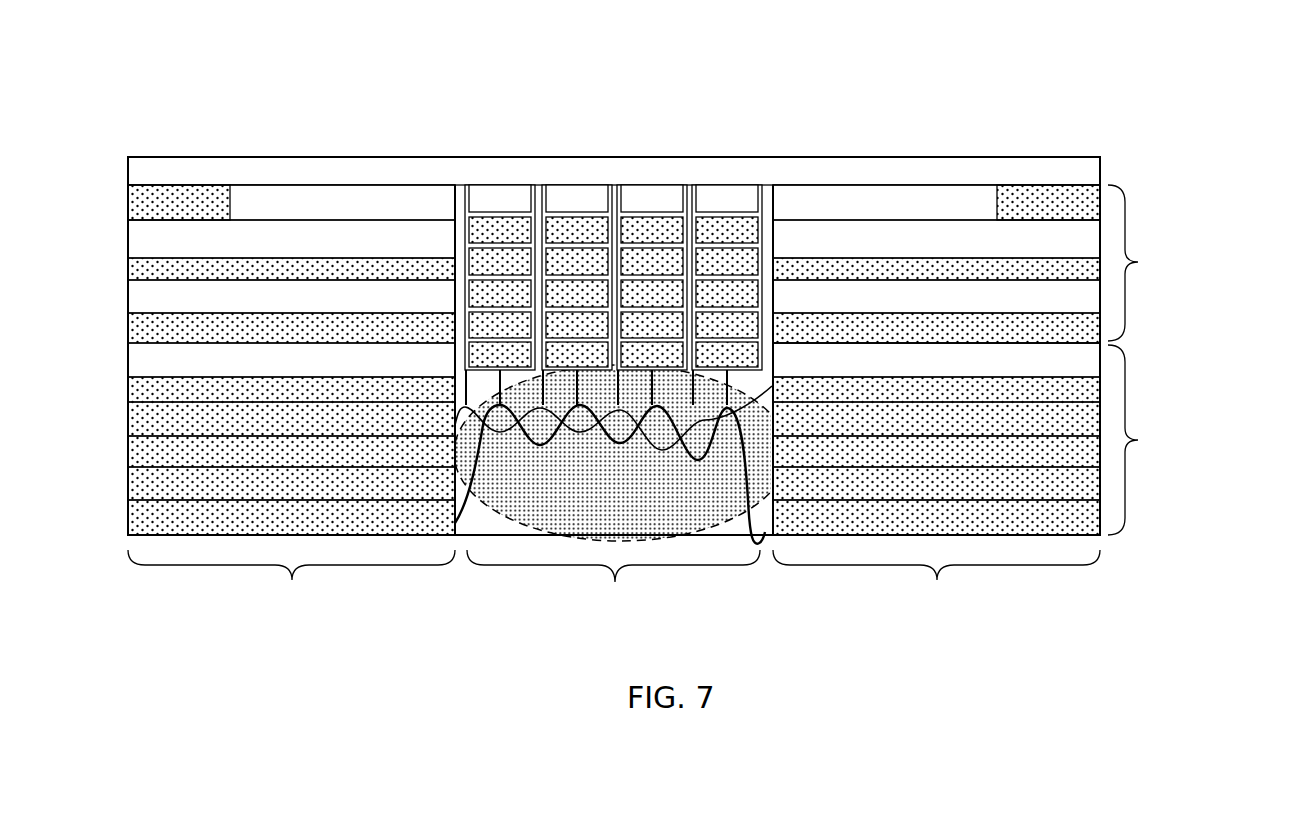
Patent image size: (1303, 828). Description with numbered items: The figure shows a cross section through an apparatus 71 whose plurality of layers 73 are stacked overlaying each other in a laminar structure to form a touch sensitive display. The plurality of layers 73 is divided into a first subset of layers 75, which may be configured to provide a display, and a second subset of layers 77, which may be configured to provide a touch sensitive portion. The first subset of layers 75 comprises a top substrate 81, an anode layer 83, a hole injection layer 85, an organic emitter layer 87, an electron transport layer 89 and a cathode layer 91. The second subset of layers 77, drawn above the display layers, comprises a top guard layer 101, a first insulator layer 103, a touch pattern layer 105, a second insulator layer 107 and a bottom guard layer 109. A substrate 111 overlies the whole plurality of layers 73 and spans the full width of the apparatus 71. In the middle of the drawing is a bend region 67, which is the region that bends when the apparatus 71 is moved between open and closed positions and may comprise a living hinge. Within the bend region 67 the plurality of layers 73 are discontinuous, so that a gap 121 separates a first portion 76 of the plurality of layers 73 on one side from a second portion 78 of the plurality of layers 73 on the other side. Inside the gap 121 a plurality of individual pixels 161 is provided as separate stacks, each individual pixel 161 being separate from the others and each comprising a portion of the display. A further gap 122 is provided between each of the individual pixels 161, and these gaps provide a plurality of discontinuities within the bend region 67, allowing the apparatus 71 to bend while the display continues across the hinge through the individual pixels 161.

The bend region 67 is at (613, 138).
The apparatus 71 is at (1105, 541).
The plurality of layers 73 is at (1108, 345).
The first subset of layers 75 is at (1183, 440).
The first portion of the plurality of layers 76 is at (291, 401).
The second subset of layers 77 is at (1198, 263).
The second portion of the plurality of layers 78 is at (936, 401).
The top substrate 81 is at (127, 363).
The anode layer 83 is at (127, 389).
The hole injection layer 85 is at (127, 418).
The organic emitter layer 87 is at (127, 452).
The electron transport layer 89 is at (127, 480).
The cathode layer 91 is at (127, 512).
The top guard layer 101 is at (127, 202).
The first insulator layer 103 is at (127, 238).
The touch pattern layer 105 is at (127, 268).
The second insulator layer 107 is at (127, 297).
The bottom guard layer 109 is at (127, 327).
The substrate 111 is at (267, 158).
The gap 121 is at (621, 491).
The gap between individual pixels 122 is at (538, 184).
The individual pixel 161 is at (497, 184).